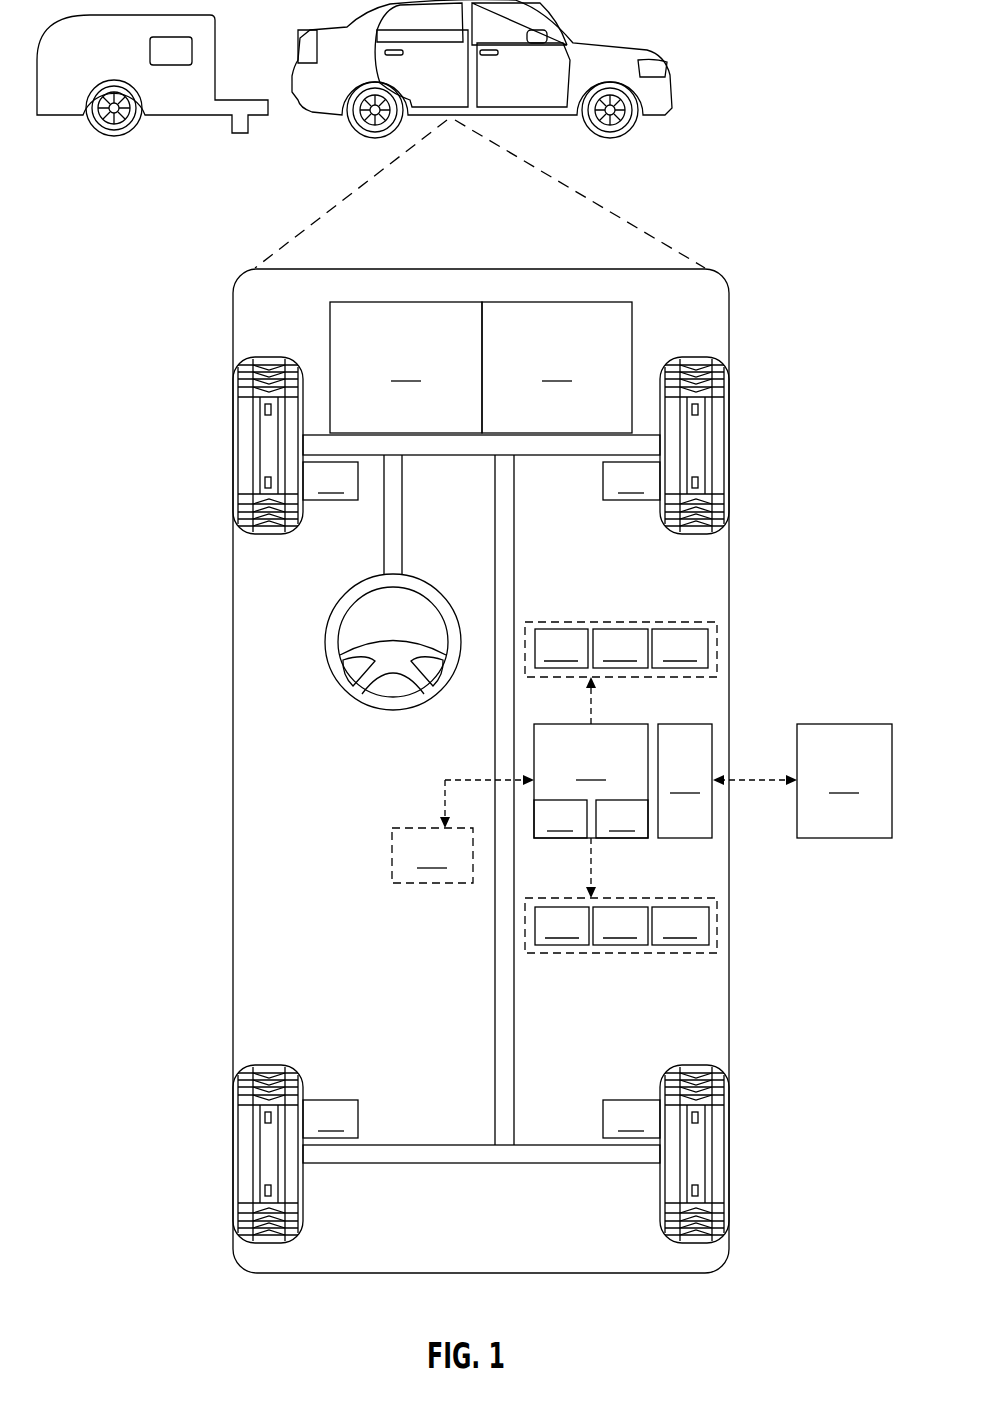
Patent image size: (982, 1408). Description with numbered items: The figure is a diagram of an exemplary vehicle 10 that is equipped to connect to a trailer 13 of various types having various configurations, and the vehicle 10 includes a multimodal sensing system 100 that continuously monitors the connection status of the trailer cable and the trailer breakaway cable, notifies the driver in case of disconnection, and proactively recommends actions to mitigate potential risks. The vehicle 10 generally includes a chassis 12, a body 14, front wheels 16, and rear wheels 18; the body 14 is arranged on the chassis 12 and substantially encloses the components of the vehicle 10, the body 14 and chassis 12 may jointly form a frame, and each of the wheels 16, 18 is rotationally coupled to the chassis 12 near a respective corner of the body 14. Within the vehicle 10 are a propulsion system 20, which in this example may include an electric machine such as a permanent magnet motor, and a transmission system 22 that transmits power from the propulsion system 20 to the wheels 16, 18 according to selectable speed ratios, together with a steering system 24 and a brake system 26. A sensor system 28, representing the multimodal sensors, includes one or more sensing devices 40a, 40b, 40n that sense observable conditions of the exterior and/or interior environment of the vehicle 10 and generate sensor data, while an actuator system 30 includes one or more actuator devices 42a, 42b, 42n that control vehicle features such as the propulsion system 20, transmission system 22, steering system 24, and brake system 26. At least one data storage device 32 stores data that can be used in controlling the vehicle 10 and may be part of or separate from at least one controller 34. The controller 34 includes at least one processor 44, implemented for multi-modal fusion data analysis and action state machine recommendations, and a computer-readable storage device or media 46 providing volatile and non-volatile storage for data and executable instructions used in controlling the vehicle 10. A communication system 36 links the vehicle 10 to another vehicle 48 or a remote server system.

The vehicle 10 is at (302, 46).
The trailer 13 is at (185, 108).
The multimodal sensing system 100 is at (782, 259).
The chassis 12 is at (494, 1050).
The body 14 is at (233, 860).
The front wheels 16 is at (243, 443).
The rear wheels 18 is at (243, 1155).
The propulsion system 20 is at (406, 367).
The transmission system 22 is at (557, 367).
The steering system 24 is at (407, 483).
The brake system 26 is at (481, 800).
The sensor system 28 is at (621, 633).
The actuator system 30 is at (621, 945).
The data storage device 32 is at (432, 855).
The controller 34 is at (591, 781).
The communication system 36 is at (685, 781).
The sensing device 40a is at (561, 648).
The sensing device 40b is at (620, 648).
The sensing device 40n is at (680, 648).
The actuator device 42a is at (562, 926).
The actuator device 42b is at (620, 926).
The actuator device 42n is at (680, 926).
The processor 44 is at (560, 819).
The computer-readable storage device or media 46 is at (622, 819).
The another vehicle 48 is at (844, 781).